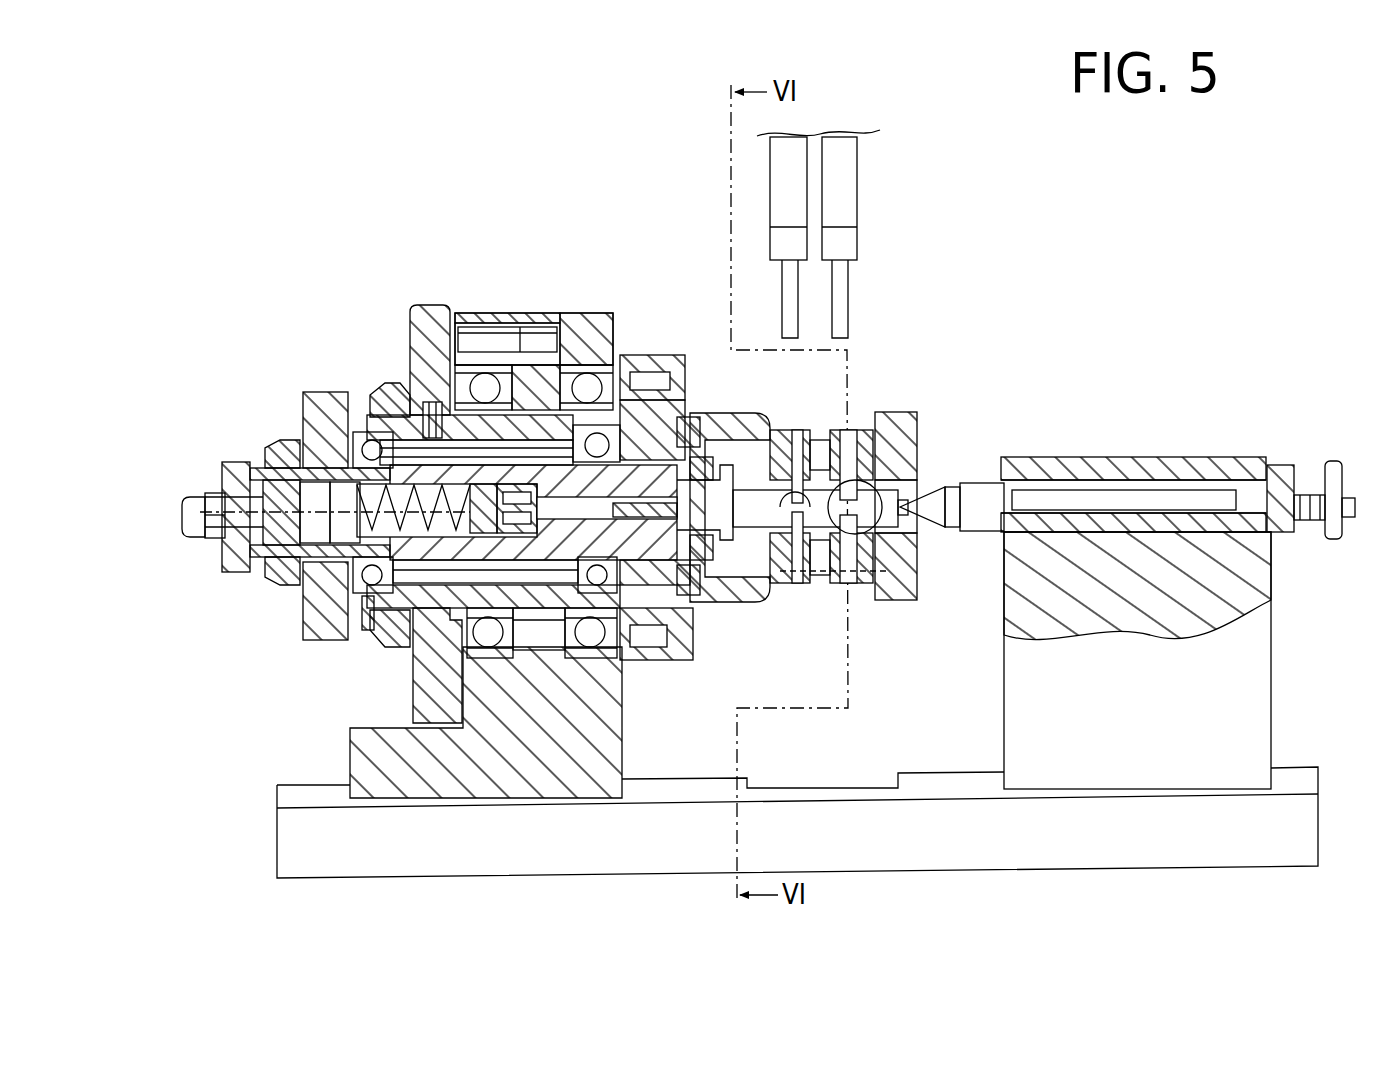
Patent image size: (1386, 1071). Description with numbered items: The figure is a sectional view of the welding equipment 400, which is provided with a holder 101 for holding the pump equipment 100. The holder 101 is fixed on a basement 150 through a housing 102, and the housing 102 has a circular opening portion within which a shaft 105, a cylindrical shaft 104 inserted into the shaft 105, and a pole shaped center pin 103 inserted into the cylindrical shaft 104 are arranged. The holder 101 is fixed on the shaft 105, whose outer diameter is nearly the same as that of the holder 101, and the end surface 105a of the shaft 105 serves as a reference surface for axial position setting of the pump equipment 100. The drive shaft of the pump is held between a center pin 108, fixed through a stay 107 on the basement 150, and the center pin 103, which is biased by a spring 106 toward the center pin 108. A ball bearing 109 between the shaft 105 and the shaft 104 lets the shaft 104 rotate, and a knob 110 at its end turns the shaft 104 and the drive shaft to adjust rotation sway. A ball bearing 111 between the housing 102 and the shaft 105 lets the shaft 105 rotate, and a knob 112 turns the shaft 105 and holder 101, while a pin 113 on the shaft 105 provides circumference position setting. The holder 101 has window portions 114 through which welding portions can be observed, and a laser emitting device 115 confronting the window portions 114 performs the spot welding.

The pump equipment 100 is at (936, 428).
The holder 101 is at (748, 414).
The housing 102 is at (547, 333).
The center pin 103 is at (640, 490).
The cylindrical shaft 104 is at (530, 473).
The shaft 105 is at (590, 336).
The end surface 105a is at (692, 622).
The spring 106 is at (417, 495).
The stay 107 is at (1272, 636).
The center pin 108 is at (986, 468).
The ball bearing 109 is at (323, 393).
The knob 110 is at (303, 630).
The ball bearing 111 is at (481, 373).
The knob 112 is at (413, 305).
The pin 113 is at (685, 400).
The window portions 114 is at (861, 416).
The laser emitting device 115 is at (872, 237).
The basement 150 is at (1320, 821).
The welding equipment 400 is at (1017, 262).